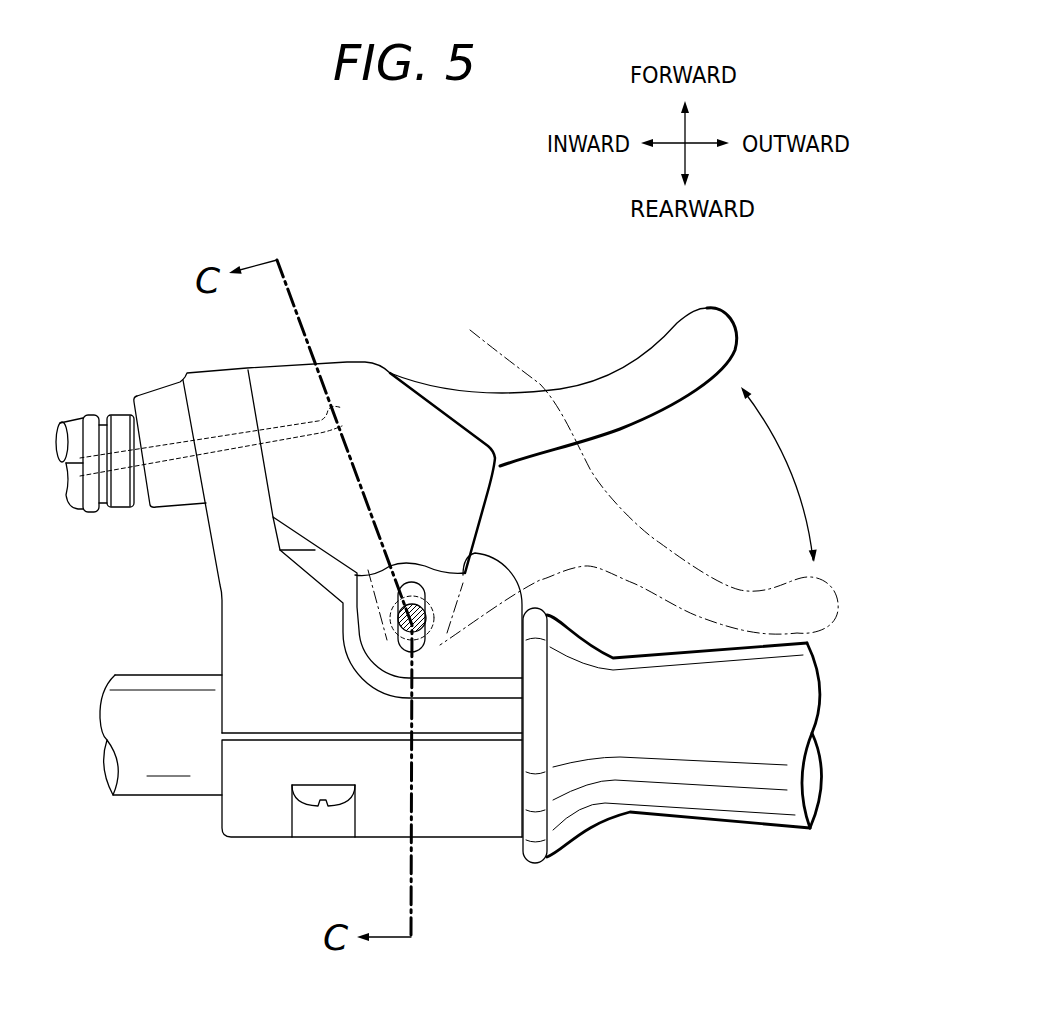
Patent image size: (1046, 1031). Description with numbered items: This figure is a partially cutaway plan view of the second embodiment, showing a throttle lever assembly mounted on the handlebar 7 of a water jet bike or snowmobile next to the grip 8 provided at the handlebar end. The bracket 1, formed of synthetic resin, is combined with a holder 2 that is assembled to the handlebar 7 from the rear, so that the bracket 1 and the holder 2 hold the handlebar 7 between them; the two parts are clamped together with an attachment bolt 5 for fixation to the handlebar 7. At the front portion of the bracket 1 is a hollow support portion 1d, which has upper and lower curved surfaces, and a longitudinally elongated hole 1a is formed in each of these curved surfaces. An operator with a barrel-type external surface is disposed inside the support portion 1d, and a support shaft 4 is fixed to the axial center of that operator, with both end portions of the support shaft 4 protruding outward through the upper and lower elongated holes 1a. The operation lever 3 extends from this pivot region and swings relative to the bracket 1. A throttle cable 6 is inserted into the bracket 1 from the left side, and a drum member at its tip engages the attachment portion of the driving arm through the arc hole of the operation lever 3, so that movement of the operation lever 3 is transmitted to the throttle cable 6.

The bracket 1 is at (210, 403).
The elongated hole 1a is at (412, 582).
The support portion 1d is at (485, 595).
The holder 2 is at (437, 820).
The operation lever 3 is at (632, 387).
The support shaft 4 is at (418, 652).
The attachment bolt 5 is at (292, 797).
The throttle cable 6 is at (185, 443).
The handlebar 7 is at (198, 767).
The grip 8 is at (653, 793).